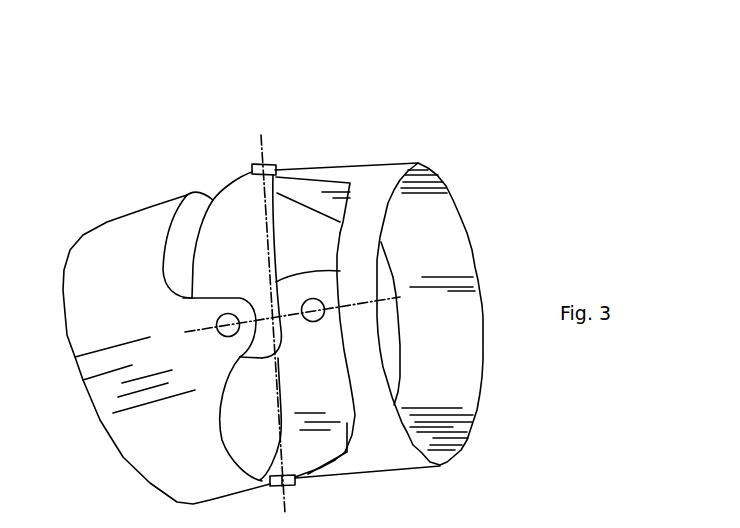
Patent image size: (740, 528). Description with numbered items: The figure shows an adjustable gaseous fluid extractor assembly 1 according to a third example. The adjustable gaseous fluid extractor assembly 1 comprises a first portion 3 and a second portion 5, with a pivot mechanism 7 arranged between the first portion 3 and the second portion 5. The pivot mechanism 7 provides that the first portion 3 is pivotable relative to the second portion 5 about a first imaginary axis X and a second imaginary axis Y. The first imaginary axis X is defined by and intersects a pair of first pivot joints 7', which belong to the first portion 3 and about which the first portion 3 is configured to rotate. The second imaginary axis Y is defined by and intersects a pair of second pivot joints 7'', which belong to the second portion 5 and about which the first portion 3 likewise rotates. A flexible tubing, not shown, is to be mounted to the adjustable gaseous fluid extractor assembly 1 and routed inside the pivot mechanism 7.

The adjustable gaseous fluid extractor assembly 1 is at (560, 130).
The first portion 3 is at (378, 176).
The second portion 5 is at (135, 217).
The pivot mechanism 7 is at (372, 321).
The first pivot joints 7' is at (275, 320).
The second pivot joints 7'' is at (262, 341).
The first imaginary axis X is at (263, 158).
The second imaginary axis Y is at (193, 332).